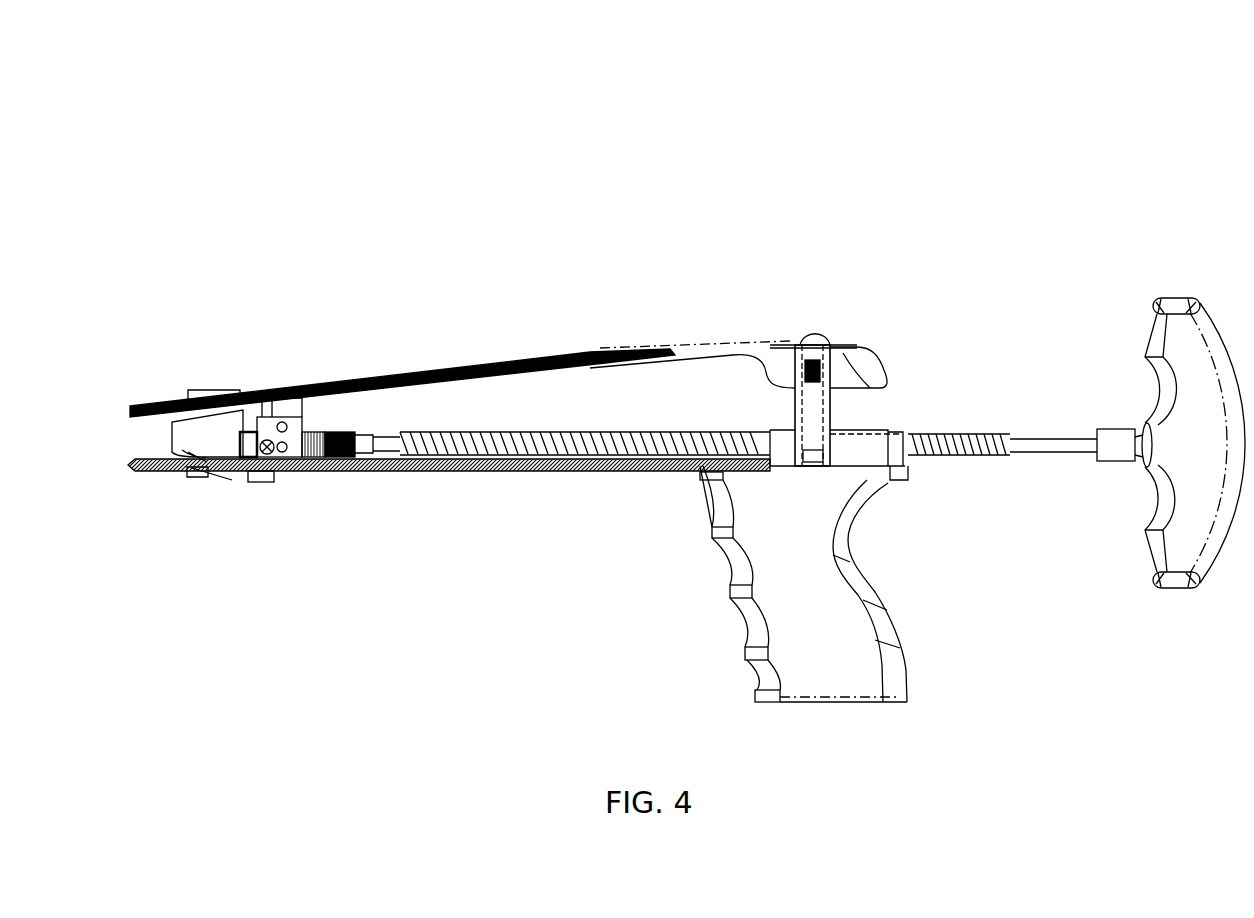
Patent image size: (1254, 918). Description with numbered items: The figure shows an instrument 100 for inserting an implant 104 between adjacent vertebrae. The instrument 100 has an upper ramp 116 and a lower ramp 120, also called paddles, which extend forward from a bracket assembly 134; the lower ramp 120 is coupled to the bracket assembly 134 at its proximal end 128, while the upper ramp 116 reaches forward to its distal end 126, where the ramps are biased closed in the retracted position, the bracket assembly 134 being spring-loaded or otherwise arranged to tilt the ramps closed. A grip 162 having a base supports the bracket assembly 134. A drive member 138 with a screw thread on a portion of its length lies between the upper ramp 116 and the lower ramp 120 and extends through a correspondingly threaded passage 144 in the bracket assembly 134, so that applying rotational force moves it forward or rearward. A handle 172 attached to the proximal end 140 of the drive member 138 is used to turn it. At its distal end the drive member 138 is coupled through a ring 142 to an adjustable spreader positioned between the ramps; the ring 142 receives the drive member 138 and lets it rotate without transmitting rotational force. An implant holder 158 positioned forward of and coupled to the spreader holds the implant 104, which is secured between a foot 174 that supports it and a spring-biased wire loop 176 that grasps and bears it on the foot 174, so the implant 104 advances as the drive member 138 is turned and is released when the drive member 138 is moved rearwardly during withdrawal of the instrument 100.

The instrument 100 is at (804, 120).
The implant 104 is at (180, 473).
The upper ramp 116 is at (413, 377).
The lower ramp 120 is at (408, 472).
The distal end of the upper ramp 126 is at (205, 393).
The proximal end of the lower ramp 128 is at (783, 456).
The bracket assembly 134 is at (857, 363).
The drive member 138 is at (567, 430).
The proximal end of the drive member 140 is at (1063, 443).
The ring 142 is at (353, 417).
The threaded passage 144 is at (910, 437).
The implant holder 158 is at (300, 473).
The grip 162 is at (830, 660).
The handle 172 is at (1183, 537).
The foot 174 is at (235, 470).
The spring-biased wire loop 176 is at (268, 403).